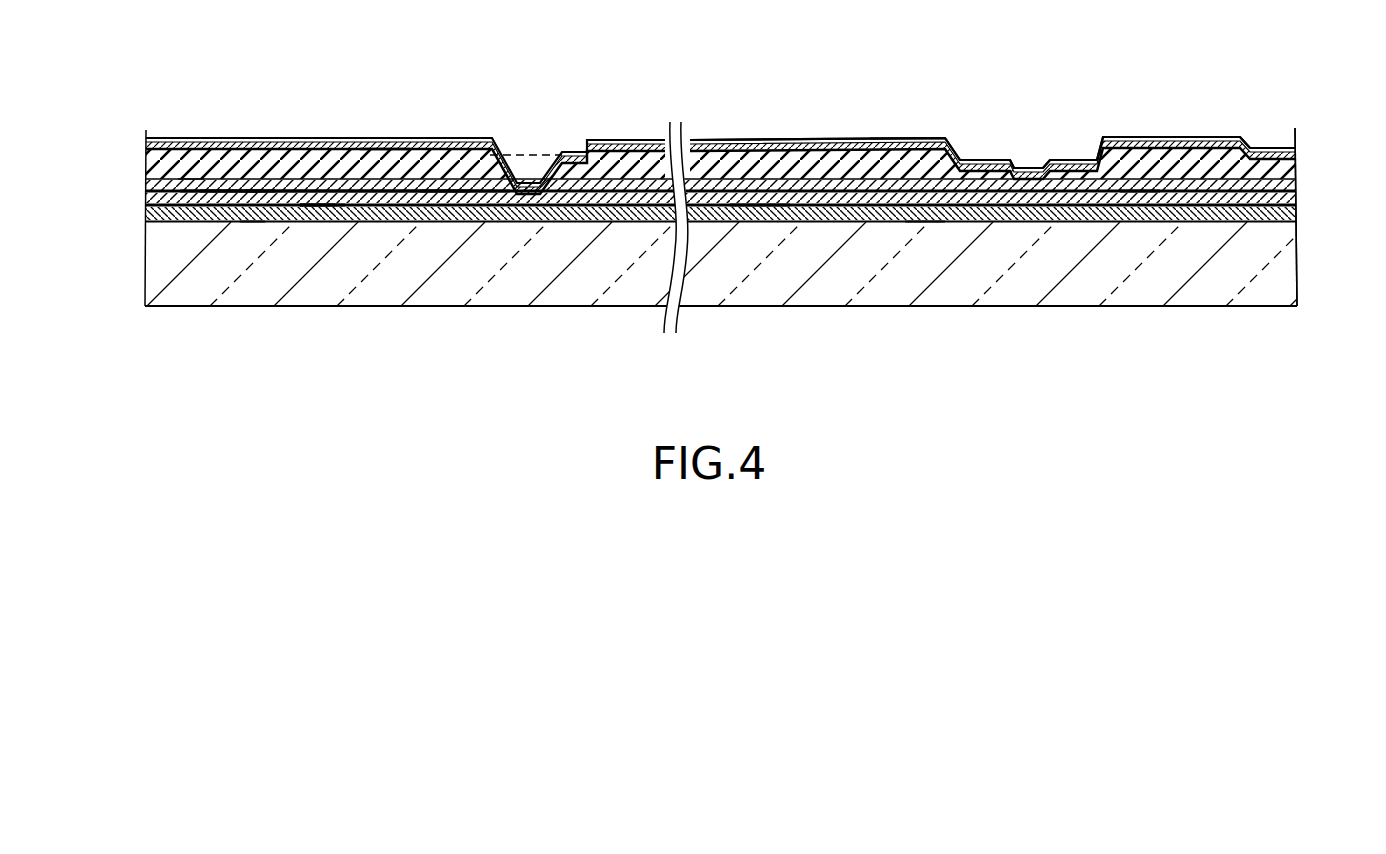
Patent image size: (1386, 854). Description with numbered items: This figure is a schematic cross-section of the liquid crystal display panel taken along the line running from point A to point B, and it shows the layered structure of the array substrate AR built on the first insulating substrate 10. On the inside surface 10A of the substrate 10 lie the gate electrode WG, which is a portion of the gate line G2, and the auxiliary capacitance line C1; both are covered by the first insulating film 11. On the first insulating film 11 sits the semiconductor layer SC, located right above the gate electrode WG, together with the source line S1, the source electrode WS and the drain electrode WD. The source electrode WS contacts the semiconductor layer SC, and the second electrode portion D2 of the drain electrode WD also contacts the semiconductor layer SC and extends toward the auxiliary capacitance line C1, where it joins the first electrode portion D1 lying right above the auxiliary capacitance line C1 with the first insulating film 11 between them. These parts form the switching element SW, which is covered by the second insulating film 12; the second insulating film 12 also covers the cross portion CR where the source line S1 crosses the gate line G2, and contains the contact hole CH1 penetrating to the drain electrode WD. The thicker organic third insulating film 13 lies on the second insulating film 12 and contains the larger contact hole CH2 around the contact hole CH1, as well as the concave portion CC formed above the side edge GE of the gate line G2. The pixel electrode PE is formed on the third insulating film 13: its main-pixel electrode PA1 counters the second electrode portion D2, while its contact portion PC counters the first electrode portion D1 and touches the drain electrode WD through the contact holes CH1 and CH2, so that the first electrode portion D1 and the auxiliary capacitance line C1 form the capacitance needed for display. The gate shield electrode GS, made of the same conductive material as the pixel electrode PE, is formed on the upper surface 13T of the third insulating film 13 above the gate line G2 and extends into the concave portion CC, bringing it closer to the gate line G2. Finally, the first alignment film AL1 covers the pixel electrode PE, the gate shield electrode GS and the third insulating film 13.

The first insulating substrate 10 is at (148, 272).
The inside surface 10A is at (150, 222).
The first insulating film 11 is at (148, 203).
The second insulating film 12 is at (150, 180).
The third insulating film 13 is at (150, 167).
The upper surface of the third insulating film 13T is at (426, 138).
The first alignment film AL1 is at (167, 138).
The line A-B end point A is at (143, 237).
The line A-B end point B is at (1296, 236).
The cross portion CR is at (190, 172).
The source line S1 is at (223, 196).
The source electrode WS is at (258, 192).
The semiconductor layer SC is at (317, 198).
The gate shield electrode GS is at (385, 147).
The second electrode portion D2 is at (440, 193).
The drain electrode WD is at (1141, 195).
The concave portion CC is at (534, 152).
The main-pixel electrode PA1 is at (623, 147).
The pixel electrode PE is at (898, 138).
The contact hole CH2 is at (962, 158).
The contact hole CH1 is at (1013, 163).
The contact portion PC is at (1173, 146).
The array substrate AR is at (1310, 123).
The switching element SW is at (252, 232).
The gate electrode WG is at (338, 278).
The gate line G2 is at (320, 215).
The side edge of the gate line GE is at (508, 224).
The auxiliary capacitance line C1 is at (925, 222).
The first electrode portion D1 is at (1161, 269).